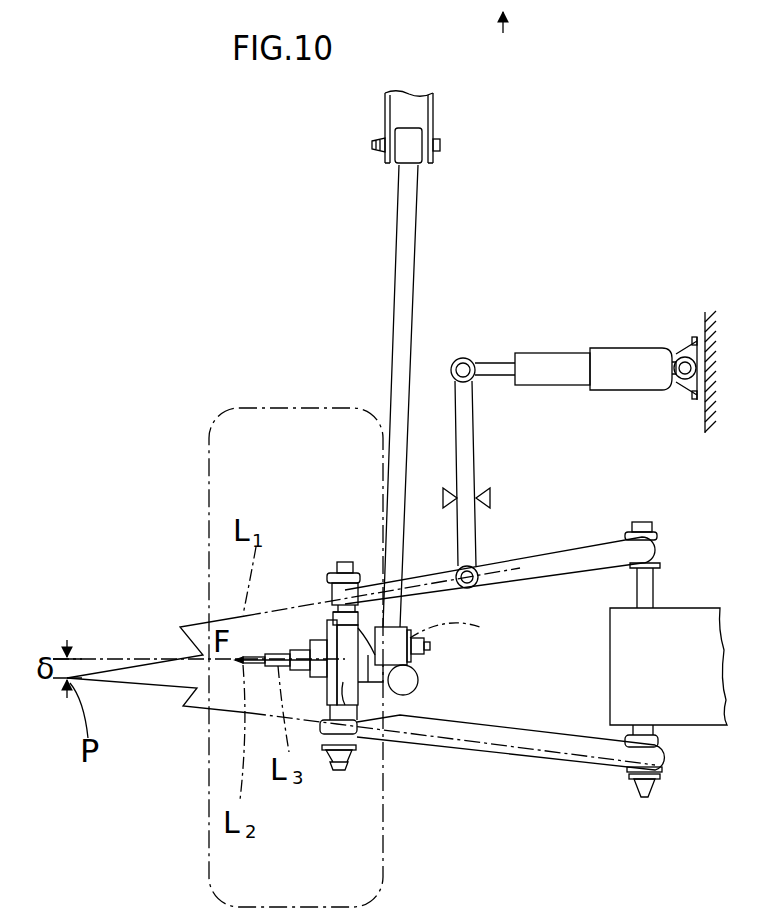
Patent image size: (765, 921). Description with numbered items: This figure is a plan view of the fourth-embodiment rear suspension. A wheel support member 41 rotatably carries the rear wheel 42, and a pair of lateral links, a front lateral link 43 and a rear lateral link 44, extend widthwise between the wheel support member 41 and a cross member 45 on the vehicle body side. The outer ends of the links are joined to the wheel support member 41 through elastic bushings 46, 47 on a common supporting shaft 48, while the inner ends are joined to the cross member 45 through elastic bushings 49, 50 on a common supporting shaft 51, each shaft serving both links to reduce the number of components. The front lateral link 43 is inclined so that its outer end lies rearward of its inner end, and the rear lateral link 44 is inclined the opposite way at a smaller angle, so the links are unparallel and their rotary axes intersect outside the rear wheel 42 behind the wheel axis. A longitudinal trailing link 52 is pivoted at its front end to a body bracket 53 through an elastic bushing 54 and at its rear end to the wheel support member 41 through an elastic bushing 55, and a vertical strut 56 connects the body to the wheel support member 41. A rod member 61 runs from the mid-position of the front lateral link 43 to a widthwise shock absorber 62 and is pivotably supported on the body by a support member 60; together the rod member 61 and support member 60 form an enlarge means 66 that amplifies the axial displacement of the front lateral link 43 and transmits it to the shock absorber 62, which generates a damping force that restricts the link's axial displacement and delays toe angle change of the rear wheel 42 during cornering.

The wheel support member 41 is at (277, 667).
The rear wheel 42 is at (262, 408).
The front lateral link 43 is at (537, 552).
The rear lateral link 44 is at (513, 753).
The cross member 45 is at (687, 608).
The elastic bushing 46 is at (332, 592).
The elastic bushing 47 is at (352, 735).
The supporting shaft 48 is at (343, 560).
The elastic bushing 49 is at (647, 543).
The elastic bushing 50 is at (662, 745).
The supporting shaft 51 is at (633, 582).
The trailing link 52 is at (405, 269).
The bracket 53 is at (433, 107).
The elastic bushing 54 is at (440, 146).
The elastic bushing 55 is at (413, 632).
The strut 56 is at (420, 690).
The support member 60 is at (443, 497).
The rod member 61 is at (476, 433).
The shock absorber 62 is at (613, 357).
The enlarge means 66 is at (515, 472).